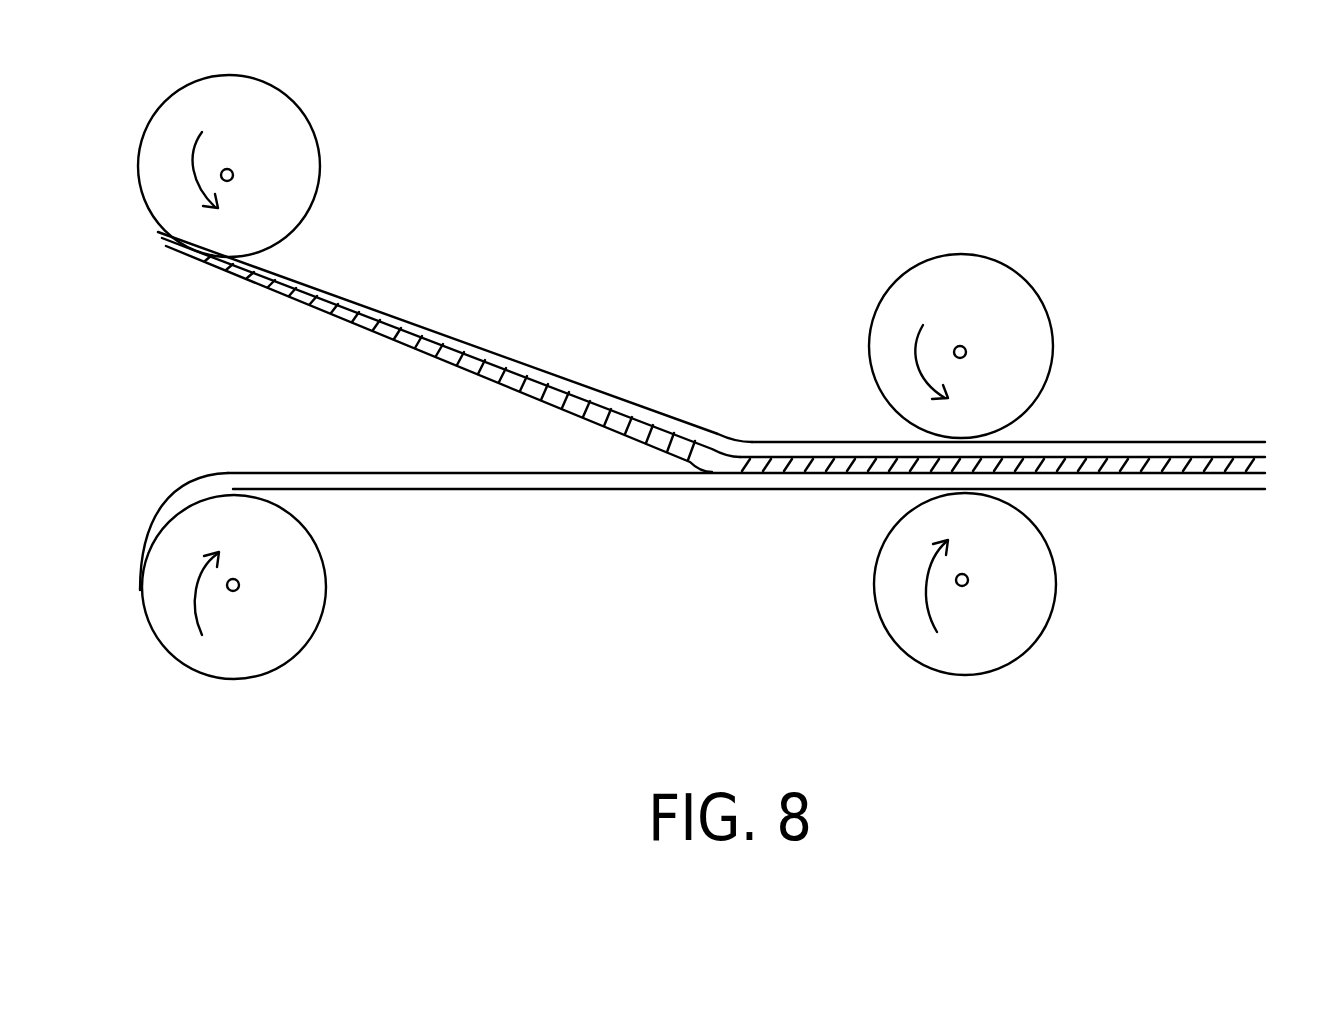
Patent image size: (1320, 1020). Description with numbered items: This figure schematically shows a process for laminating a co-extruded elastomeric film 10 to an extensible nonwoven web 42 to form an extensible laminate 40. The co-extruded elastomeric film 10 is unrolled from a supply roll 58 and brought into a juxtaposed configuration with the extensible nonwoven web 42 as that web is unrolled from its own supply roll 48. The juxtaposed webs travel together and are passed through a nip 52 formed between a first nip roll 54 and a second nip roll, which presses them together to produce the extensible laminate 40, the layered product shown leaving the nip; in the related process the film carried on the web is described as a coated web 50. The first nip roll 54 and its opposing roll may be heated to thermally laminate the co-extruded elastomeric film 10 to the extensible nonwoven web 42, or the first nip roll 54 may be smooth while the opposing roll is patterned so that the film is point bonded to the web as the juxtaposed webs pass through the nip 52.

The co-extruded elastomeric film 10 is at (401, 309).
The extensible laminate 40 is at (1199, 432).
The extensible nonwoven web 42 is at (430, 493).
The supply roll 48 is at (297, 657).
The coated web 50 is at (1040, 640).
The nip 52 is at (875, 508).
The first nip roll 54 is at (1023, 280).
The supply roll 58 is at (300, 112).